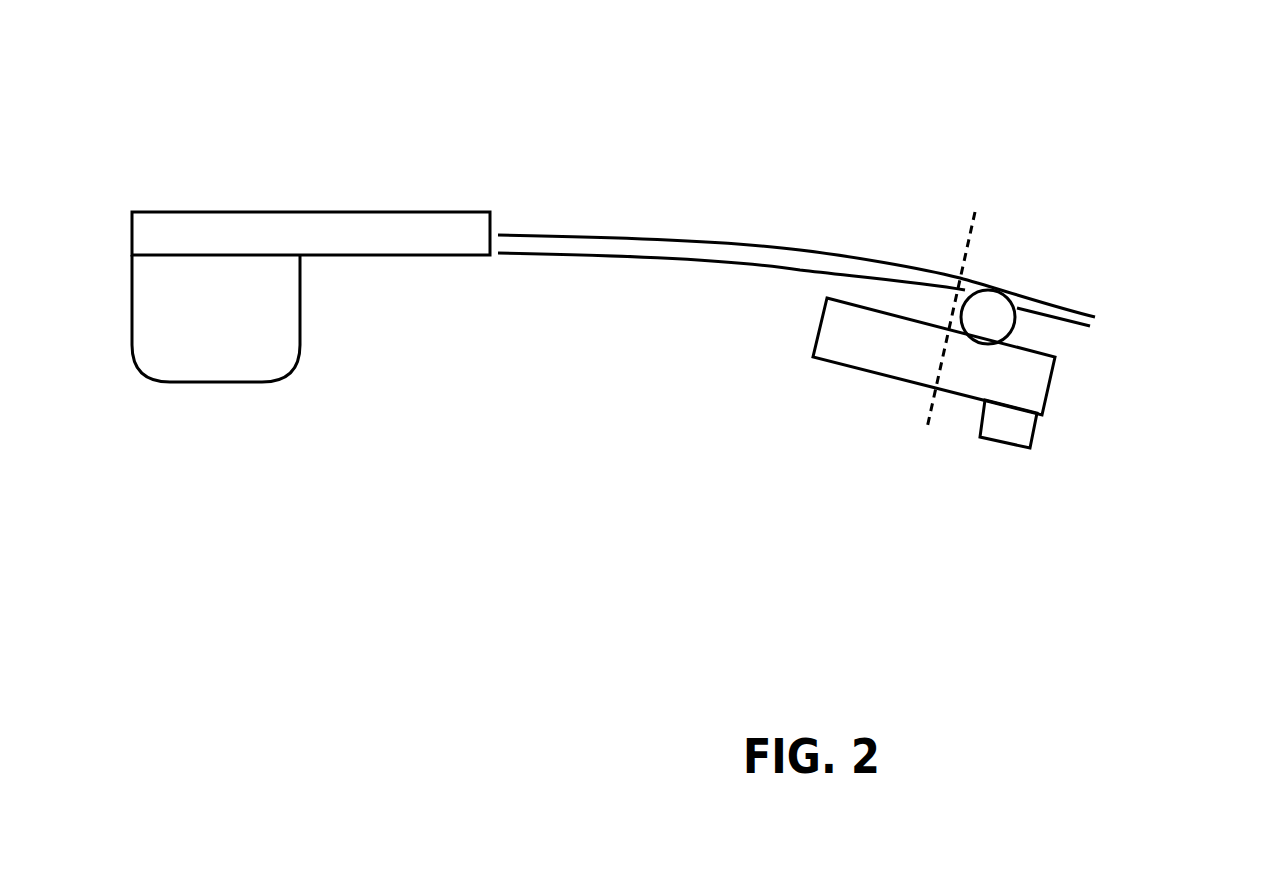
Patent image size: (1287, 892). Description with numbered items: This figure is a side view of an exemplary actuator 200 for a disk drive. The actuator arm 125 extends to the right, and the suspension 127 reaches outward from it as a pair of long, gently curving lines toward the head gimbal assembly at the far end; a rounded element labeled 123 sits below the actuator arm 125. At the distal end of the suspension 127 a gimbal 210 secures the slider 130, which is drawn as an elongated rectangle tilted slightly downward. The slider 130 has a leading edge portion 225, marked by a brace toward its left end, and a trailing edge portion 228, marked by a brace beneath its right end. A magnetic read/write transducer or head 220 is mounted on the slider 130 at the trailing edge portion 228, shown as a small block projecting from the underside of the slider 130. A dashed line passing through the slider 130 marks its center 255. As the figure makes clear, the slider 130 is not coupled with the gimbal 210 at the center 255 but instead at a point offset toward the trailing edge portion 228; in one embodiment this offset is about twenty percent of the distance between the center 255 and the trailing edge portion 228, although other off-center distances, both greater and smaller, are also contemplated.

The actuator 200 is at (452, 38).
The actuator arm 125 is at (253, 212).
The handle 123 is at (213, 383).
The suspension 127 is at (600, 253).
The center of the slider 255 is at (962, 306).
The gimbal 210 is at (1000, 320).
The slider 130 is at (1000, 373).
The head 220 is at (1013, 428).
The leading edge portion 225 is at (743, 385).
The trailing edge portion 228 is at (1035, 479).